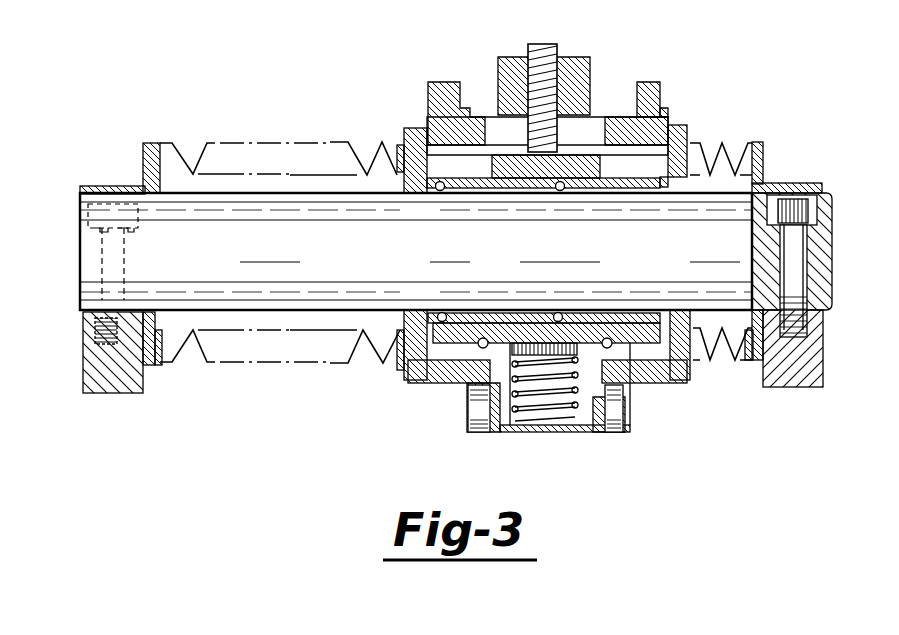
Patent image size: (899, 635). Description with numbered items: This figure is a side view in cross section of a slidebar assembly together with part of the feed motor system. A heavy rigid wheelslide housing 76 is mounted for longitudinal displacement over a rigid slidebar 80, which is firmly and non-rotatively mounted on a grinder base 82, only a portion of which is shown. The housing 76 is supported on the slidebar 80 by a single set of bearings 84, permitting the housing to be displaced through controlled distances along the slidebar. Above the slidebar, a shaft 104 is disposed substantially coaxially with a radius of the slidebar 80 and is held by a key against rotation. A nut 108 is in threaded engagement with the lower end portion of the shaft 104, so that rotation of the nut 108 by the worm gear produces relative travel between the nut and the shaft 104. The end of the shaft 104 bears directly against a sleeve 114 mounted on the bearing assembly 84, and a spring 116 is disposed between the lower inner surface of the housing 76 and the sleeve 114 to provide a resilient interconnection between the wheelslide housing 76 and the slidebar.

The wheelslide housing 76 is at (432, 383).
The slidebar 80 is at (273, 197).
The grinder base 82 is at (84, 356).
The bearings 84 is at (480, 188).
The shaft 104 is at (543, 43).
The nut 108 is at (498, 72).
The sleeve 114 is at (630, 167).
The spring 116 is at (505, 432).